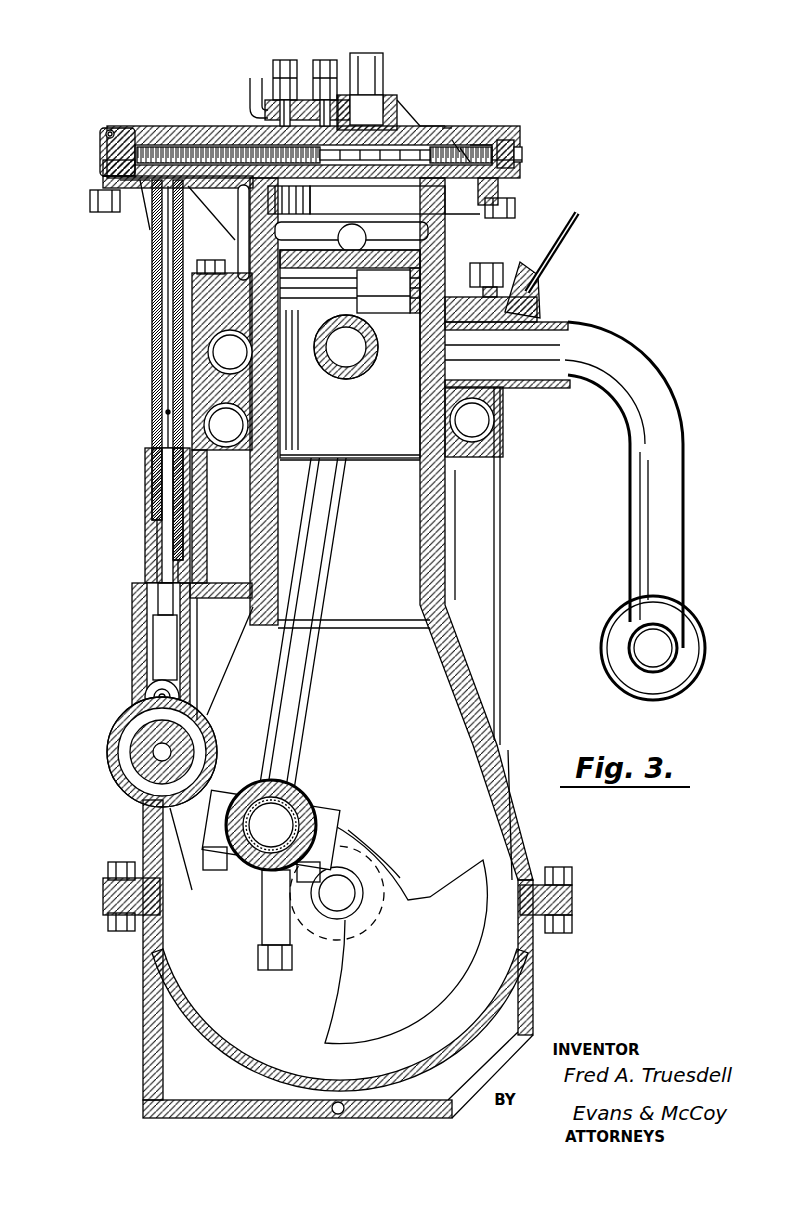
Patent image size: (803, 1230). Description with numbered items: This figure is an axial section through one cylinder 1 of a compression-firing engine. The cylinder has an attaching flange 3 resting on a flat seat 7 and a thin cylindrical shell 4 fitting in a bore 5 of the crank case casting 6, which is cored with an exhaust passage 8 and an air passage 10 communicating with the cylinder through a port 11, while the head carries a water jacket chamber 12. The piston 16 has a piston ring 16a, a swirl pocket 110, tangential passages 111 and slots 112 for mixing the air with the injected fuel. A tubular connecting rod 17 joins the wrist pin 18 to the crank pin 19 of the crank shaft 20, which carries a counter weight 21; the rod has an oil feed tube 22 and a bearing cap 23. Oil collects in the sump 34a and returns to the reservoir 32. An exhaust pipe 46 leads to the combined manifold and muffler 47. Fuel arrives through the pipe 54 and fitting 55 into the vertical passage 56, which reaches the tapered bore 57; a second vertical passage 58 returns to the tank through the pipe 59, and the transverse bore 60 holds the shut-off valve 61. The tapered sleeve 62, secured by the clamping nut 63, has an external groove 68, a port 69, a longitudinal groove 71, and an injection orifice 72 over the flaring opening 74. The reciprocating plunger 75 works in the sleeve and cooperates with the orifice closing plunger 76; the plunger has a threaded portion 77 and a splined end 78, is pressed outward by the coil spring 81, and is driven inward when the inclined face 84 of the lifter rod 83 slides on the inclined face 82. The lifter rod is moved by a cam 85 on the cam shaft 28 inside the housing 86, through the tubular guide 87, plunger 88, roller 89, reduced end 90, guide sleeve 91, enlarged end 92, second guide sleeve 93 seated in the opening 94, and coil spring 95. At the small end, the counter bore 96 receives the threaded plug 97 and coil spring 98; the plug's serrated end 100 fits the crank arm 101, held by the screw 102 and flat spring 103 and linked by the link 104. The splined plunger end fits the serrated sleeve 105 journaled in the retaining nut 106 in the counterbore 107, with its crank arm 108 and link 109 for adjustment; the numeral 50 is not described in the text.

The cylinder 1 is at (530, 345).
The attaching flange 3 is at (555, 256).
The cylindrical shell 4 is at (443, 498).
The bore 5 is at (445, 565).
The crank case casting 6 is at (470, 640).
The flat seat 7 is at (210, 345).
The exhaust passage 8 is at (215, 380).
The air passage 10 is at (482, 426).
The port 11 is at (478, 404).
The water jacket chamber 12 is at (240, 238).
The piston 16 is at (380, 378).
The piston ring 16a is at (462, 215).
The connecting rod 17 is at (330, 592).
The wrist pin 18 is at (405, 446).
The crank pin 19 is at (320, 792).
The crank shaft 20 is at (400, 870).
The counter weight 21 is at (392, 1008).
The oil feed tube 22 is at (330, 680).
The bearing cap 23 is at (248, 900).
The cam shaft 28 is at (122, 790).
The reservoir 32 is at (165, 1072).
The sump or channel 34a is at (340, 1116).
The exhaust pipe 46 is at (685, 505).
The combined exhaust manifold and muffler 47 is at (692, 618).
The petcock body 50 is at (545, 290).
The pipe 54 is at (282, 60).
The fitting 55 is at (322, 60).
The vertical passage 56 is at (262, 100).
The tapered bore 57 is at (200, 128).
The second vertical passage 58 is at (387, 100).
The pipe 59 is at (352, 95).
The transverse bore 60 is at (372, 62).
The valve 61 is at (250, 80).
The tapered sleeve 62 is at (160, 128).
The clamping nut 63 is at (485, 142).
The external groove 68 is at (238, 126).
The upwardly opening port 69 is at (405, 120).
The longitudinal groove 71 is at (340, 100).
The injection orifice 72 is at (345, 188).
The downwardly flaring opening 74 is at (398, 222).
The reciprocating plunger 75 is at (308, 188).
The orifice closing plunger 76 is at (420, 128).
The threaded portion 77 is at (175, 128).
The splined outer end portion 78 is at (100, 162).
The coil spring 81 is at (211, 212).
The flat outer end face 82 is at (152, 230).
The lifter rod 83 is at (178, 318).
The upper end face 84 is at (170, 295).
The cam 85 is at (130, 752).
The housing 86 is at (135, 732).
The tubular guide portion 87 is at (135, 642).
The plunger 88 is at (153, 621).
The roller 89 is at (148, 695).
The upper end portion 90 is at (152, 579).
The guide sleeve 91 is at (145, 516).
The enlarged lower end 92 is at (190, 578).
The second guide sleeve 93 is at (152, 415).
The opening 94 is at (160, 270).
The coil spring 95 is at (150, 546).
The counter bore 96 is at (470, 130).
The threaded plug 97 is at (495, 146).
The coil spring 98 is at (478, 136).
The serrated outer end 100 is at (514, 150).
The crank arm 101 is at (500, 192).
The screw 102 is at (522, 154).
The flat spring 103 is at (512, 164).
The link 104 is at (516, 203).
The serrated sleeve 105 is at (100, 140).
The retaining nut 106 is at (108, 128).
The threaded counterbore 107 is at (140, 183).
The crank arm 108 is at (90, 199).
The link 109 is at (130, 182).
The swirl pocket 110 is at (383, 303).
The passage 111 is at (395, 240).
The slot 112 is at (383, 291).